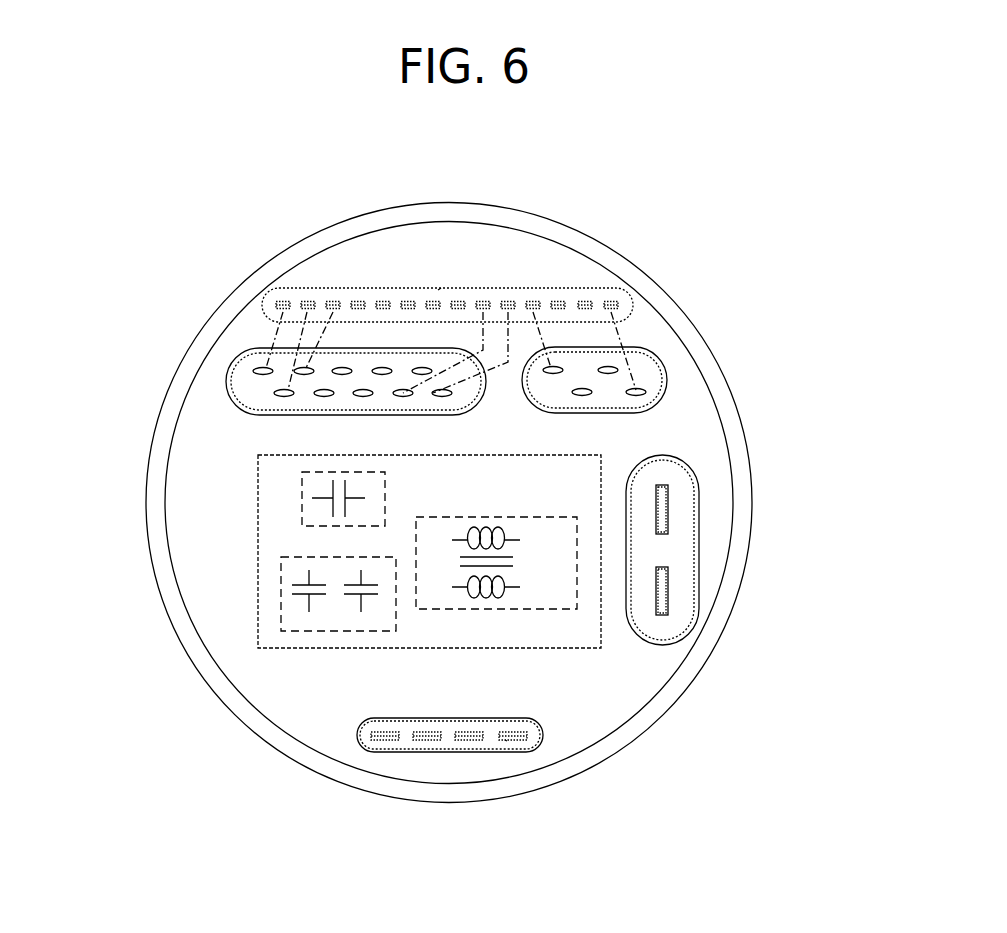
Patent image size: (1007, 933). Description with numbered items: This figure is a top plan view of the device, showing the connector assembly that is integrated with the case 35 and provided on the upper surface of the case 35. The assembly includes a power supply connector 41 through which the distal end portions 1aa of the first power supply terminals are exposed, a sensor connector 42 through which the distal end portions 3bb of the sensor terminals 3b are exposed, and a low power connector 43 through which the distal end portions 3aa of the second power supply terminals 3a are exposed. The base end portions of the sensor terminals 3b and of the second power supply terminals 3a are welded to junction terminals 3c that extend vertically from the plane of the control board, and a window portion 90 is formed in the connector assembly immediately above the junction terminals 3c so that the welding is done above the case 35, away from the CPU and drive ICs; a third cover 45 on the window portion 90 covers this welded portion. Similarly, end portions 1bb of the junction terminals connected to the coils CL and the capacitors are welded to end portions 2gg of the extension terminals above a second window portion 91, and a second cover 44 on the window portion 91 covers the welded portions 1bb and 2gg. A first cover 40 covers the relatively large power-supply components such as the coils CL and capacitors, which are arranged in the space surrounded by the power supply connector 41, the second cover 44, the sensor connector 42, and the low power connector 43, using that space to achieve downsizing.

The case 35 is at (223, 707).
The third cover 45 is at (337, 288).
The window portion 90 is at (438, 290).
The junction terminals 3c is at (617, 306).
The sensor connector 42 is at (227, 387).
The distal end portions of the sensor terminals 3bb is at (263, 370).
The sensor terminals 3b is at (283, 393).
The low power connector 43 is at (670, 378).
The distal end portions of the second power supply terminals 3aa is at (612, 368).
The second power supply terminals 3a is at (640, 395).
The first cover 40 is at (257, 525).
The coils CL is at (513, 610).
The power supply connector 41 is at (700, 540).
The distal end portions of the first power supply terminals 1aa is at (670, 500).
The second cover 44 is at (417, 753).
The window portion 91 is at (370, 735).
The end portions of the extension terminals 2gg is at (523, 714).
The end portions of the junction terminals 1bb is at (505, 740).